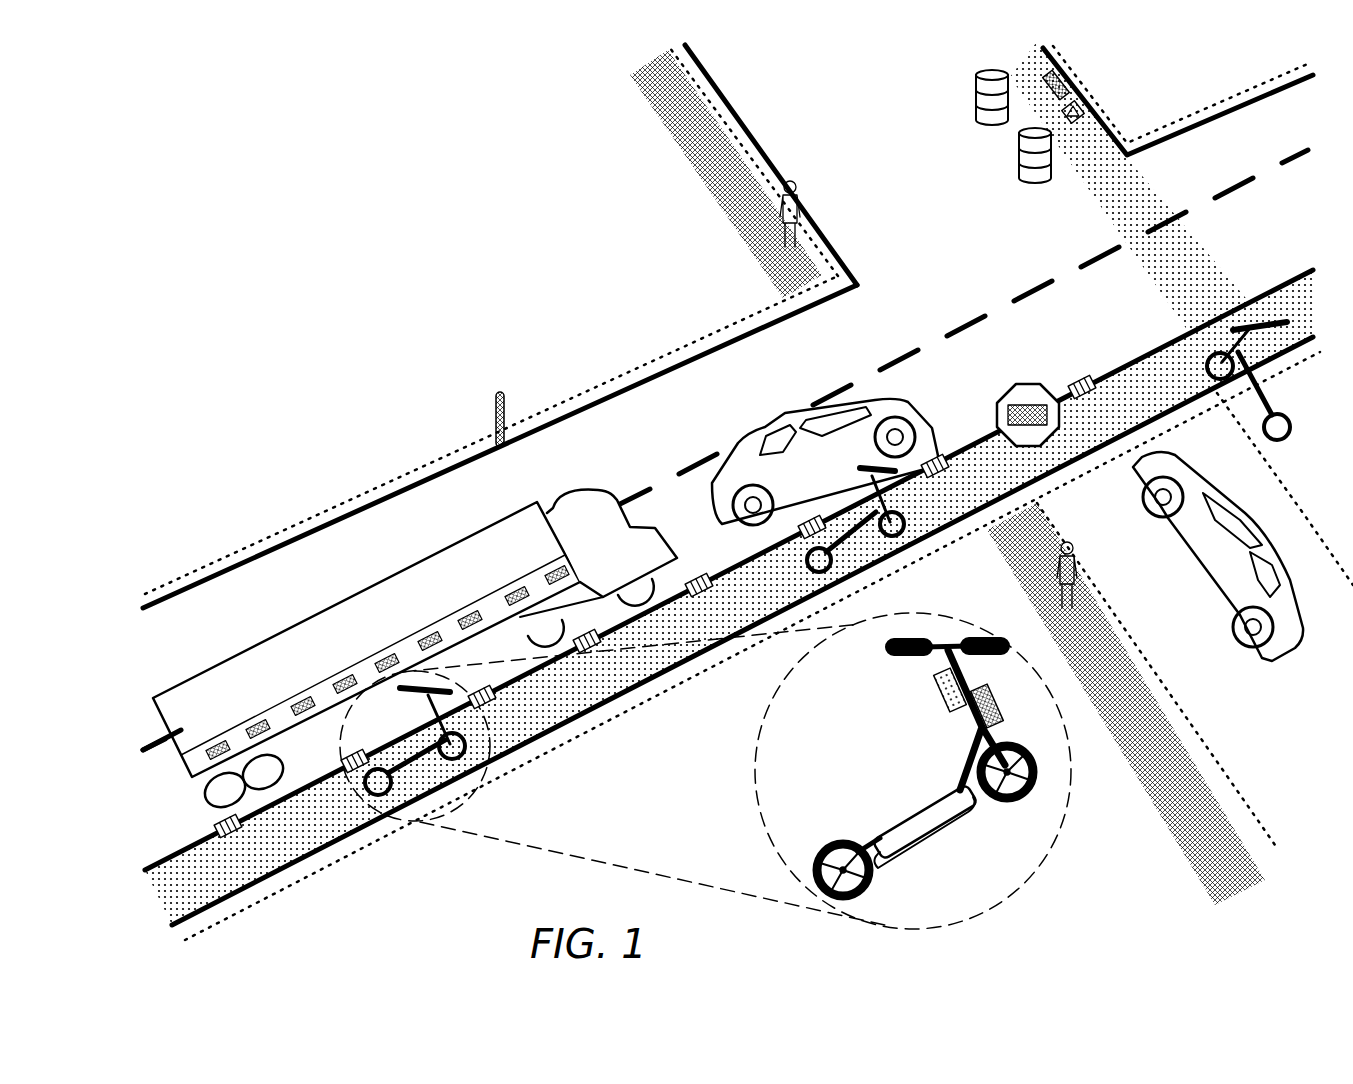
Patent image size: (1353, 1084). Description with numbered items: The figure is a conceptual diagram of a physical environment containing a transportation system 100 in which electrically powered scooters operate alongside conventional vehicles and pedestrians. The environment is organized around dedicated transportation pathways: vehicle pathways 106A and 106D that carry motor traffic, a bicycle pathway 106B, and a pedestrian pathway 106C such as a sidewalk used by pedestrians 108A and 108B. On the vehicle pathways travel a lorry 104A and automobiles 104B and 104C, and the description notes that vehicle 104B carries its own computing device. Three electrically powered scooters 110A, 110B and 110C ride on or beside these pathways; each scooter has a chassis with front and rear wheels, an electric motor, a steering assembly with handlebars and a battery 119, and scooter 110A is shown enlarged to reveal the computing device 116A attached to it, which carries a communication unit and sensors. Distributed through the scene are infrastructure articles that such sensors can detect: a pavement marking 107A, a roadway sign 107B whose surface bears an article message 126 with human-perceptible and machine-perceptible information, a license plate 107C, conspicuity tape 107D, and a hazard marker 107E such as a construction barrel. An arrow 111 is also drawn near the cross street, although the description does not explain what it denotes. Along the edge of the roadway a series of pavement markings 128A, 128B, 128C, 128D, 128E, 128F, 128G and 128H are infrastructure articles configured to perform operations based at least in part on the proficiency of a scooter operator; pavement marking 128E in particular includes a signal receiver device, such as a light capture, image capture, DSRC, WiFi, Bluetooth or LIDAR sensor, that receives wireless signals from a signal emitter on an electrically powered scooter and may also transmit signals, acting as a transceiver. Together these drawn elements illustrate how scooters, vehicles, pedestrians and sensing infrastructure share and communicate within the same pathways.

The transportation system 100 is at (328, 176).
The lorry 104A is at (433, 552).
The automobile 104B is at (778, 430).
The automobile 104C is at (1217, 590).
The vehicle pathway 106A is at (283, 578).
The bicycle pathway 106B is at (212, 875).
The pedestrian pathway 106C is at (712, 165).
The vehicle pathway 106D is at (787, 108).
The pavement marking 107A is at (1025, 293).
The roadway sign 107B is at (1030, 383).
The license plate 107C is at (715, 520).
The conspicuity tape 107D is at (213, 745).
The hazard marker 107E is at (975, 75).
The pedestrian 108A is at (790, 183).
The pedestrian 108B is at (1073, 547).
The electrically powered scooter 110A is at (410, 840).
The electrically powered scooter 110B is at (905, 548).
The electrically powered scooter 110C is at (1262, 272).
The direction of travel 111 is at (1118, 90).
The computing device 116A is at (937, 698).
The battery 119 is at (996, 708).
The article message 126 is at (1020, 402).
The pavement marking 128A is at (224, 818).
The pavement marking 128B is at (352, 755).
The pavement marking 128C is at (482, 690).
The pavement marking 128D is at (590, 633).
The pavement marking 128E is at (700, 578).
The pavement marking 128F is at (808, 520).
The pavement marking 128G is at (948, 455).
The pavement marking 128H is at (1081, 375).